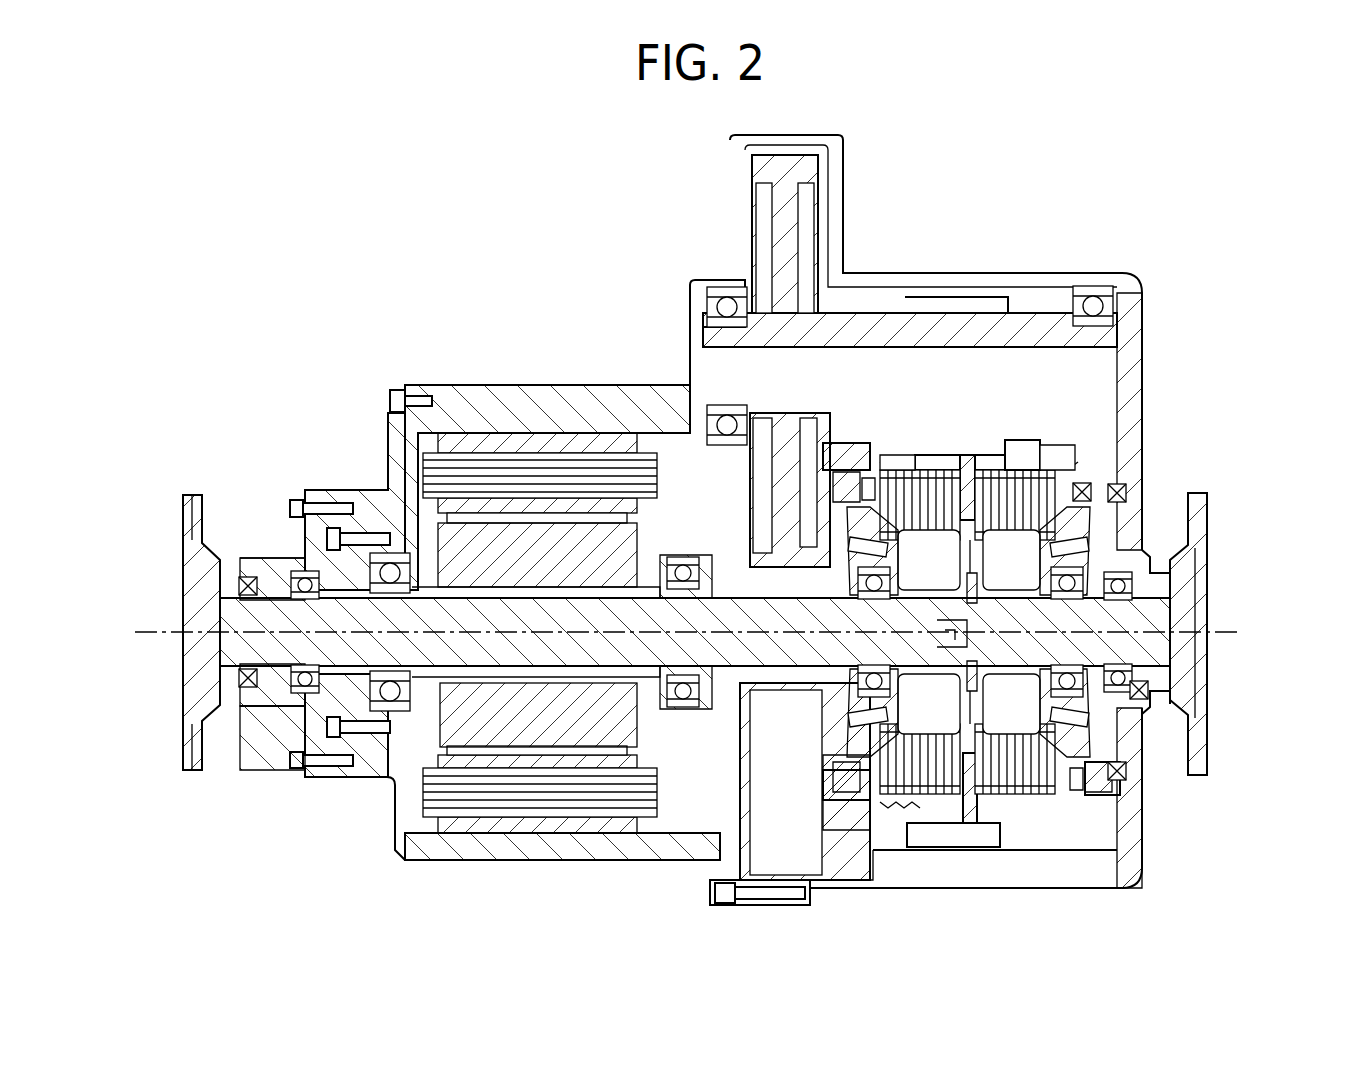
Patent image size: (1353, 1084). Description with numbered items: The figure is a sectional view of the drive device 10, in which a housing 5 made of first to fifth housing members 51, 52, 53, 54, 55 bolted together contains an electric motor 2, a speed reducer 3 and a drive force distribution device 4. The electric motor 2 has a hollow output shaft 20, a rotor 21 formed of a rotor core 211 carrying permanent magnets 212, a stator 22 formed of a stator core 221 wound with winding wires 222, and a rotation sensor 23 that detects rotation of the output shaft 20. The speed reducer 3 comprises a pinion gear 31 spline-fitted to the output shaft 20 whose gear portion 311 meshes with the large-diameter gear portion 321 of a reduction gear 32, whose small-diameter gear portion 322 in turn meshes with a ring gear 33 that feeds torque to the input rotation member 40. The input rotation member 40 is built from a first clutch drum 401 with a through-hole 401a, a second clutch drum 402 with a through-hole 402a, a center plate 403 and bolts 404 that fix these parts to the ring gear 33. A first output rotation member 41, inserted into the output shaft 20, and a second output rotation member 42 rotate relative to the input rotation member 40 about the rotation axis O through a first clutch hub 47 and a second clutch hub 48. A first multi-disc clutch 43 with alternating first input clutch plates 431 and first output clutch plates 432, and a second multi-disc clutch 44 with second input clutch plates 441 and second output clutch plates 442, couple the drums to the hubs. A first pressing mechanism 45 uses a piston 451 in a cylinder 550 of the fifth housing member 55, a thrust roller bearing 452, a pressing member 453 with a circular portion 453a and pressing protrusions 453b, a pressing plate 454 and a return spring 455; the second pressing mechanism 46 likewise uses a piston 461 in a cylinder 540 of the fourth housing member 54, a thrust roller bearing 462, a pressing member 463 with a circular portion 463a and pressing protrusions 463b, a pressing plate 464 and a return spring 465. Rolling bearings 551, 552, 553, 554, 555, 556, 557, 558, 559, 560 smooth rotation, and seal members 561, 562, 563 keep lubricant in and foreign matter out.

The drive device 10 is at (390, 332).
The electric motor 2 is at (514, 632).
The output shaft 20 is at (645, 592).
The rotor 21 is at (471, 687).
The rotor core 211 is at (448, 730).
The permanent magnets 212 is at (460, 747).
The stator 22 is at (514, 681).
The stator core 221 is at (543, 823).
The winding wires 222 is at (518, 800).
The rotation sensor 23 is at (305, 705).
The speed reducer 3 is at (1058, 296).
The pinion gear 31 is at (788, 642).
The gear portion 311 is at (780, 683).
The reduction gear 32 is at (910, 235).
The large-diameter gear portion 321 is at (815, 158).
The small-diameter gear portion 322 is at (990, 300).
The ring gear 33 is at (925, 430).
The drive force distribution device 4 is at (986, 659).
The input rotation member 40 is at (1012, 447).
The first clutch drum 401 is at (927, 805).
The through-hole 401a is at (845, 440).
The second clutch drum 402 is at (1005, 795).
The through-hole 402a is at (1082, 493).
The center plate 403 is at (958, 790).
The bolts 404 is at (965, 433).
The first output rotation member 41 is at (218, 597).
The second output rotation member 42 is at (1176, 620).
The first multi-disc clutch 43 is at (920, 632).
The first input clutch plates 431 is at (905, 735).
The first output clutch plates 432 is at (935, 745).
The second multi-disc clutch 44 is at (1015, 632).
The second input clutch plates 441 is at (1020, 735).
The second output clutch plates 442 is at (1005, 745).
The first pressing mechanism 45 is at (880, 430).
The piston 451 is at (870, 775).
The thrust roller bearing 452 is at (780, 888).
The pressing member 453 is at (825, 719).
The circular portion 453a is at (835, 790).
The pressing protrusions 453b is at (853, 793).
The pressing plate 454 is at (870, 765).
The return spring 455 is at (885, 770).
The second pressing mechanism 46 is at (1048, 434).
The piston 461 is at (1095, 773).
The thrust roller bearing 462 is at (1080, 773).
The pressing member 463 is at (1132, 862).
The circular portion 463a is at (1108, 785).
The pressing protrusions 463b is at (1090, 800).
The pressing plate 464 is at (1040, 805).
The return spring 465 is at (1060, 805).
The first clutch hub 47 is at (925, 595).
The second clutch hub 48 is at (985, 597).
The housing 5 is at (647, 360).
The first housing member 51 is at (270, 565).
The second housing member 52 is at (393, 437).
The third housing member 53 is at (578, 392).
The fourth housing member 54 is at (1135, 335).
The fifth housing member 55 is at (832, 757).
The cylinder 540 is at (1115, 770).
The cylinder 550 is at (838, 780).
The rolling bearing 551 is at (383, 560).
The rolling bearing 552 is at (680, 690).
The rolling bearing 553 is at (703, 300).
The rolling bearing 554 is at (1103, 290).
The rolling bearing 555 is at (305, 565).
The rolling bearing 556 is at (895, 655).
The rolling bearing 557 is at (1170, 560).
The rolling bearing 558 is at (852, 667).
The rolling bearing 559 is at (1117, 505).
The rolling bearing 560 is at (967, 603).
The seal member 561 is at (250, 705).
The seal member 562 is at (1143, 705).
The seal member 563 is at (740, 715).
The rotation axis O is at (1222, 636).